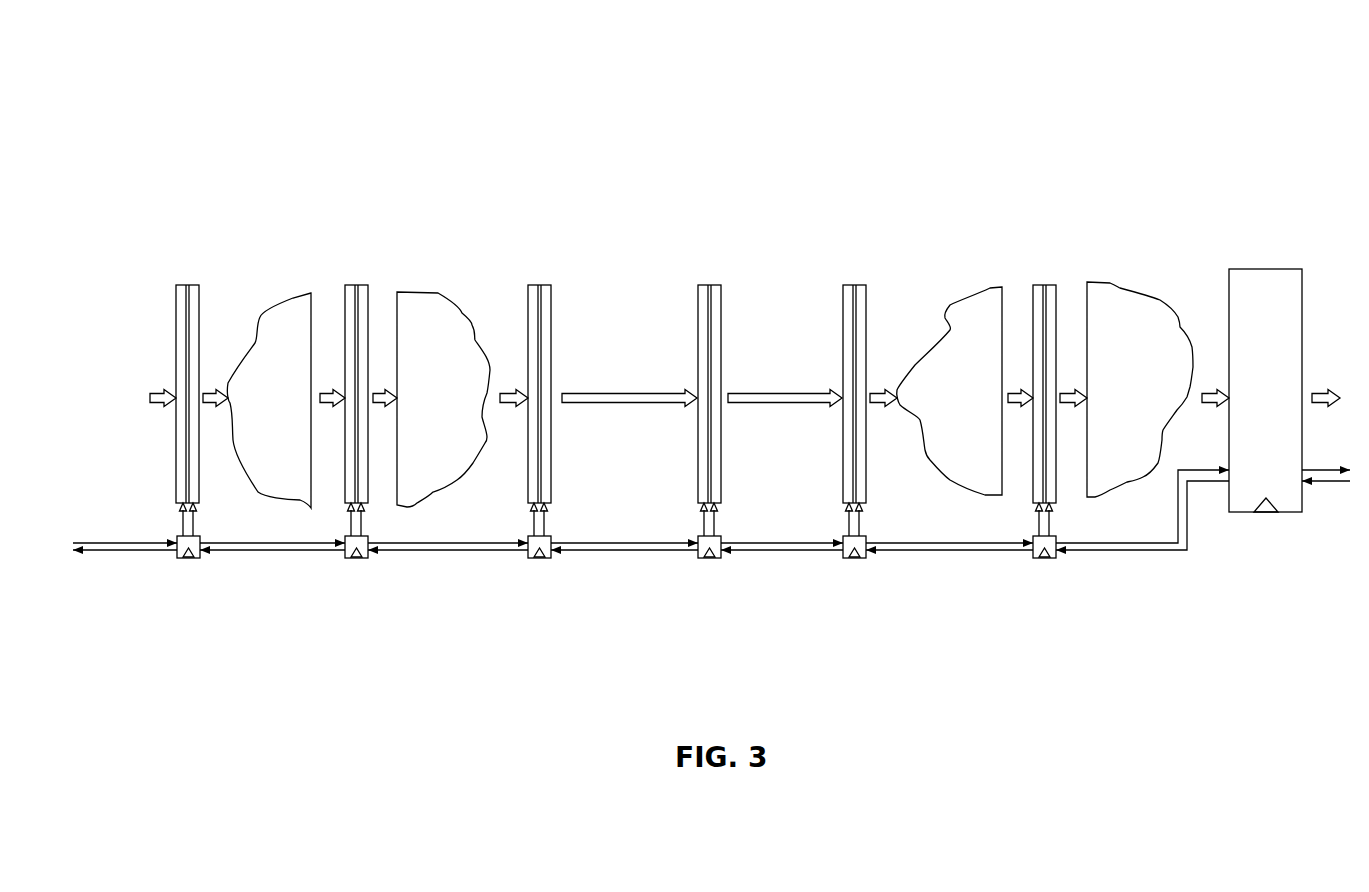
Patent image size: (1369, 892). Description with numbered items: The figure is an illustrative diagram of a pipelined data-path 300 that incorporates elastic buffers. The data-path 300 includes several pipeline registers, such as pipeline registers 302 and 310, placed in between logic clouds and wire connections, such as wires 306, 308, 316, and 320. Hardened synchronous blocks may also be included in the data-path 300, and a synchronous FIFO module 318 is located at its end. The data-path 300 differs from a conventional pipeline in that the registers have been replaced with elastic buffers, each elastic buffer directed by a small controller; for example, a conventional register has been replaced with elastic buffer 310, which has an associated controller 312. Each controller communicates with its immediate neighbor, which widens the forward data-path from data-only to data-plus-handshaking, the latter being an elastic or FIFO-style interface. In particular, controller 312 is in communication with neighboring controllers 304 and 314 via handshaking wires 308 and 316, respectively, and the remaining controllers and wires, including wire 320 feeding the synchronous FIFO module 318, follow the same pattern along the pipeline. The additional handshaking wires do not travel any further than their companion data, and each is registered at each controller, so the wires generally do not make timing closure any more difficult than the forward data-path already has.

The data-path 300 is at (178, 74).
The pipeline register 302 is at (188, 285).
The controller 304 is at (188, 558).
The wire 306 is at (73, 543).
The handshaking wire 308 is at (222, 552).
The elastic buffer 310 is at (357, 285).
The controller 312 is at (356, 558).
The controller 314 is at (540, 558).
The handshaking wire 316 is at (395, 552).
The synchronous FIFO module 318 is at (1267, 269).
The wire 320 is at (1198, 483).